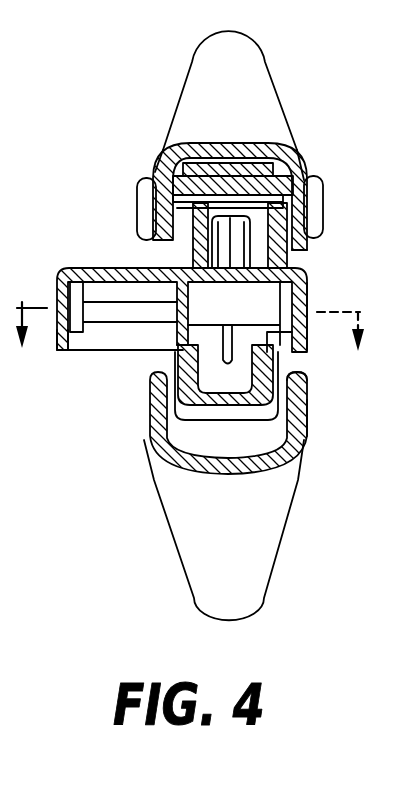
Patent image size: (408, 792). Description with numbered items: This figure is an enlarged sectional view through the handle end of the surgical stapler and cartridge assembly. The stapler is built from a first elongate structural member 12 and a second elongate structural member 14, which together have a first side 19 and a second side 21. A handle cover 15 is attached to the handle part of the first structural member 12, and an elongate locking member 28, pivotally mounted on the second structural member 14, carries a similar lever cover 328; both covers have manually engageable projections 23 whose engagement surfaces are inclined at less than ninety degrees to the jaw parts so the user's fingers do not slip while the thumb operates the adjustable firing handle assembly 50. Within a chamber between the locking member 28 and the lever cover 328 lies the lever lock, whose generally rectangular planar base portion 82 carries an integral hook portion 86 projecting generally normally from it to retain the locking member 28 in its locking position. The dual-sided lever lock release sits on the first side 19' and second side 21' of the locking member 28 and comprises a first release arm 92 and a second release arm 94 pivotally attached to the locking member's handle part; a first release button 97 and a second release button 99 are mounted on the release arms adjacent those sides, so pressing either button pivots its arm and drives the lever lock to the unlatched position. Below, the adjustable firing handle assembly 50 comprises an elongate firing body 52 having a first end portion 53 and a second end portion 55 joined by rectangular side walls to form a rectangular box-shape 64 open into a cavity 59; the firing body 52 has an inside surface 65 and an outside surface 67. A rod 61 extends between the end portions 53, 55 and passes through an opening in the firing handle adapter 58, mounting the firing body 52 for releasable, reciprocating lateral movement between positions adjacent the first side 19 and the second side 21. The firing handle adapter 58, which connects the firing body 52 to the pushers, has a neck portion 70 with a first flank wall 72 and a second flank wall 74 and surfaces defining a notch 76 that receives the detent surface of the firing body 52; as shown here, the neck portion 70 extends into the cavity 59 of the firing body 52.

The adjustable firing handle assembly 50 is at (78, 122).
The manually engageable projections 23 is at (255, 53).
The first side of the elongate locking member 19' is at (201, 192).
The lever cover 328 is at (240, 152).
The base portion of lever lock 82 is at (216, 160).
The second release arm 94 is at (180, 163).
The first release arm 92 is at (300, 183).
The hook portion 86 is at (217, 212).
The first release button 97 is at (139, 203).
The second release button 99 is at (321, 204).
The second side of the elongate locking member 21' is at (340, 194).
The elongate locking member 28 is at (148, 240).
The second elongate structural member 14 is at (290, 257).
The elongate firing body 52 is at (65, 262).
The rod 61 is at (98, 302).
The second flank wall 74 is at (285, 352).
The second end portion of firing body 55 is at (310, 313).
The first flank wall 72 is at (183, 345).
The neck portion 70 is at (247, 348).
The firing handle adapter 58 is at (176, 414).
The first elongate structural member 12 is at (240, 434).
The handle cover 15 is at (292, 485).
The second side of the structural members 21 is at (324, 393).
The notch 76 is at (308, 417).
The outside surface of firing body 67 is at (56, 348).
The first end portion of firing body 53 is at (63, 358).
The inside surface of firing body 65 is at (79, 356).
The rectangular box-shape 64 is at (101, 365).
The cavity 59 is at (117, 353).
The first side of the structural members 19 is at (140, 371).